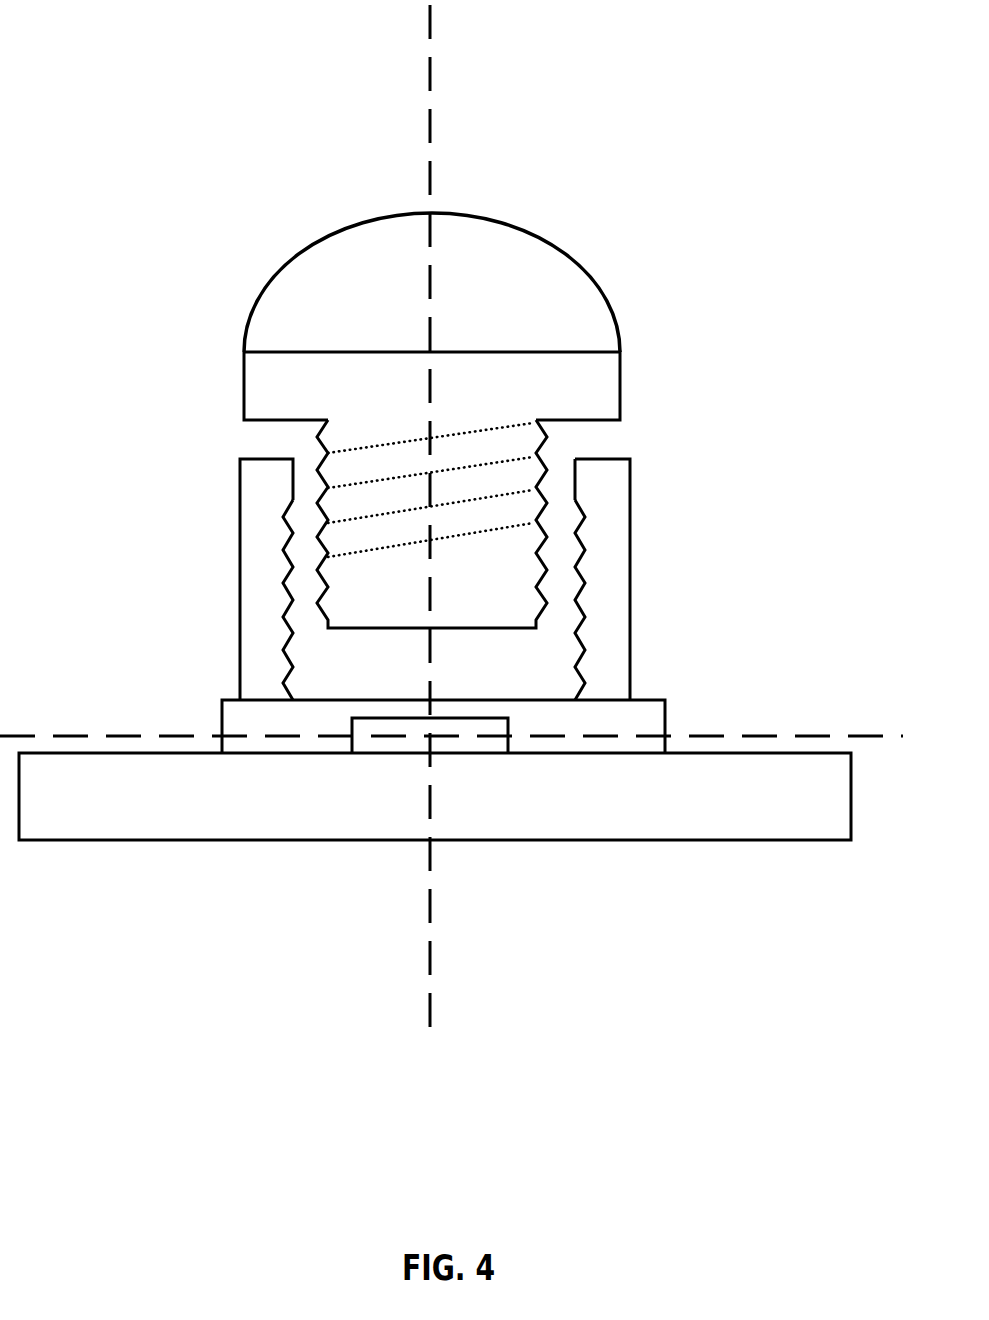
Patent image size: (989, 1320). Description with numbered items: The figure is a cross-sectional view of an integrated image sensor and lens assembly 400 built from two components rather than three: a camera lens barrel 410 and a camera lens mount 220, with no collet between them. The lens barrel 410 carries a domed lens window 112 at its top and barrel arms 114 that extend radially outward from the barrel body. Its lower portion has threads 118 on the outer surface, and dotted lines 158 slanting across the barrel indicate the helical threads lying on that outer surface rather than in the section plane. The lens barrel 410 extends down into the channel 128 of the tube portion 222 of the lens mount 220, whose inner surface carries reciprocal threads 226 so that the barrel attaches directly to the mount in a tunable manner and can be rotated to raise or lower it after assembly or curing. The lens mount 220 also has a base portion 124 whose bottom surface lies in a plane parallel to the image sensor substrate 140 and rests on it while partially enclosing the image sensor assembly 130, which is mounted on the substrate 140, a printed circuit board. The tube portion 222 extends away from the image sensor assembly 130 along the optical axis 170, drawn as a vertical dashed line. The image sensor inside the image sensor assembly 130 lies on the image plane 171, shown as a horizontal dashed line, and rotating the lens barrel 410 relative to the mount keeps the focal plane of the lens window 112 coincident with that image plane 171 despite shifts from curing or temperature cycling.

The integrated image sensor and lens assembly 400 is at (63, 37).
The lens window 112 is at (444, 420).
The camera lens barrel 410 is at (316, 272).
The barrel arm 114 is at (613, 386).
The threads 118 is at (545, 470).
The body 158 is at (322, 544).
The channel 128 is at (325, 674).
The camera lens mount 220 is at (633, 492).
The tube portion 222 is at (240, 485).
The threads 226 is at (580, 570).
The base portion 124 is at (650, 700).
The image sensor assembly 130 is at (508, 742).
The image sensor substrate 140 is at (243, 840).
The optical axis 170 is at (522, 1057).
The image plane 171 is at (730, 745).